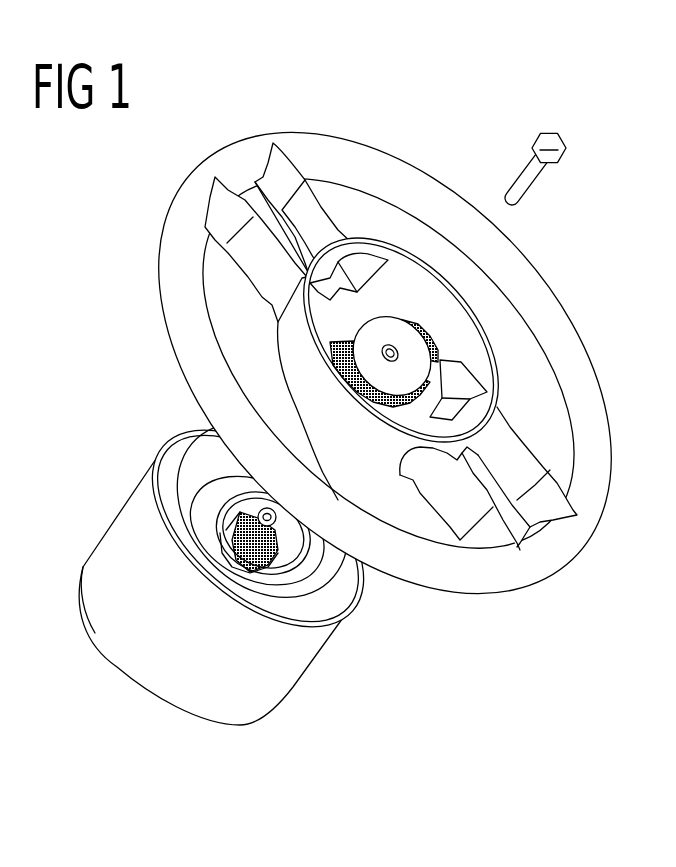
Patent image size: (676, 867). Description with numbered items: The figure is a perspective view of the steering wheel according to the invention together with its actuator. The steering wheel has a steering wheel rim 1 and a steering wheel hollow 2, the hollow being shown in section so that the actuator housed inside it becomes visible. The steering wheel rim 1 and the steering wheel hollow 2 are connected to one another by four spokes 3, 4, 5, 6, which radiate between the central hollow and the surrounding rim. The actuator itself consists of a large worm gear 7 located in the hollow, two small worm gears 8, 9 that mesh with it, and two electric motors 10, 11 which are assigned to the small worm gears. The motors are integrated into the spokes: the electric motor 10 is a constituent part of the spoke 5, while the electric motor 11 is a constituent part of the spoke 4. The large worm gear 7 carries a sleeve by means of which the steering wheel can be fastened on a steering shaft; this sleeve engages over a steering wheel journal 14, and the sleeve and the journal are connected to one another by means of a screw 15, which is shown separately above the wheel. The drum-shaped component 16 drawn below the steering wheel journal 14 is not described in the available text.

The steering wheel rim 1 is at (388, 162).
The steering wheel hollow 2 is at (490, 340).
The spoke 3 is at (318, 203).
The spoke 4 is at (253, 267).
The spoke 5 is at (520, 452).
The spoke 6 is at (443, 492).
The large worm gear 7 is at (373, 332).
The small worm gear 8 is at (437, 342).
The small worm gear 9 is at (337, 380).
The electric motor 10 is at (457, 383).
The electric motor 11 is at (320, 318).
The steering wheel journal 14 is at (240, 529).
The screw 15 is at (540, 142).
The housing drum 16 is at (145, 672).